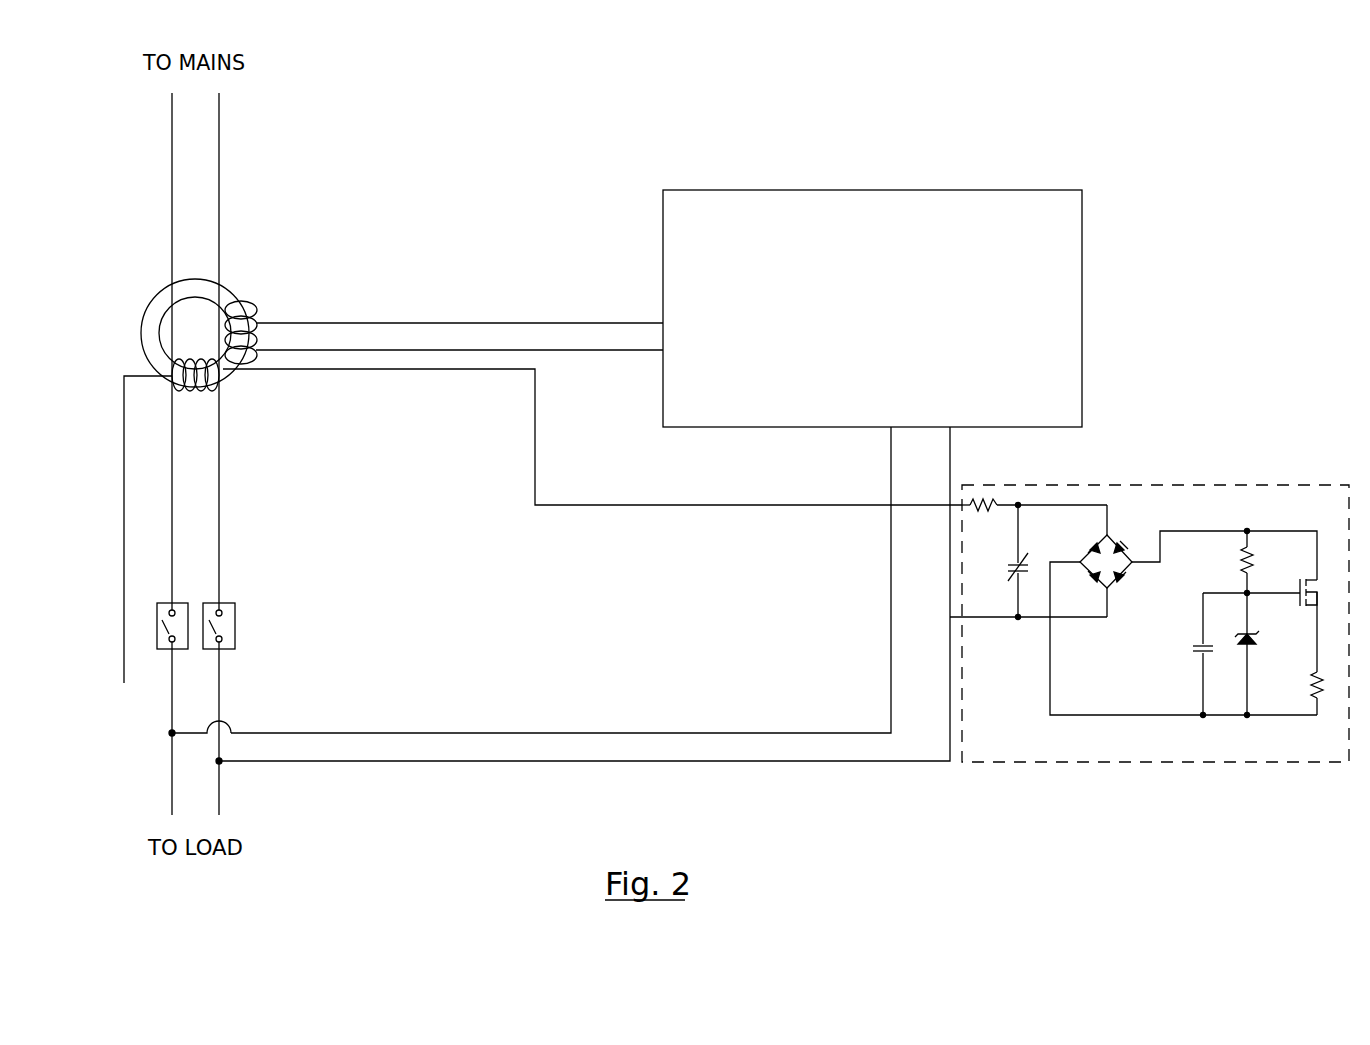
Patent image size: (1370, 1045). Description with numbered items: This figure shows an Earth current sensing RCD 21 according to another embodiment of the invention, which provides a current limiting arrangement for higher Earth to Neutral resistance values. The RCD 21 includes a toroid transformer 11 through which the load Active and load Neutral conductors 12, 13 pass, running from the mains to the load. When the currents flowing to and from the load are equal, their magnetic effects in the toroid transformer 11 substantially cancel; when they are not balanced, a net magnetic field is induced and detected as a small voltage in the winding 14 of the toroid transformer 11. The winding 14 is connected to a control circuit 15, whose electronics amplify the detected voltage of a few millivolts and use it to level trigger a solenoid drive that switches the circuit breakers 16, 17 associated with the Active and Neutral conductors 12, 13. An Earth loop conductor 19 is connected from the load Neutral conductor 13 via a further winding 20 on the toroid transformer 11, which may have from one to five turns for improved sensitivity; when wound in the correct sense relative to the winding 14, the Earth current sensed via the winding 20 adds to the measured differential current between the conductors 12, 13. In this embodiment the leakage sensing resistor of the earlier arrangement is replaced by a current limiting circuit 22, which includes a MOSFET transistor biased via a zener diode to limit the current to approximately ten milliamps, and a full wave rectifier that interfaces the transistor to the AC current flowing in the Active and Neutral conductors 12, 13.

The toroid transformer 11 is at (141, 332).
The load Active conductor 12 is at (172, 190).
The load Neutral conductor 13 is at (219, 190).
The winding 14 is at (240, 330).
The control circuit 15 is at (865, 190).
The circuit breaker 16 is at (160, 603).
The circuit breaker 17 is at (235, 625).
The Earth loop conductor 19 is at (124, 508).
The winding 20 is at (225, 394).
The RCD 21 is at (434, 219).
The current limiting circuit 22 is at (1222, 485).